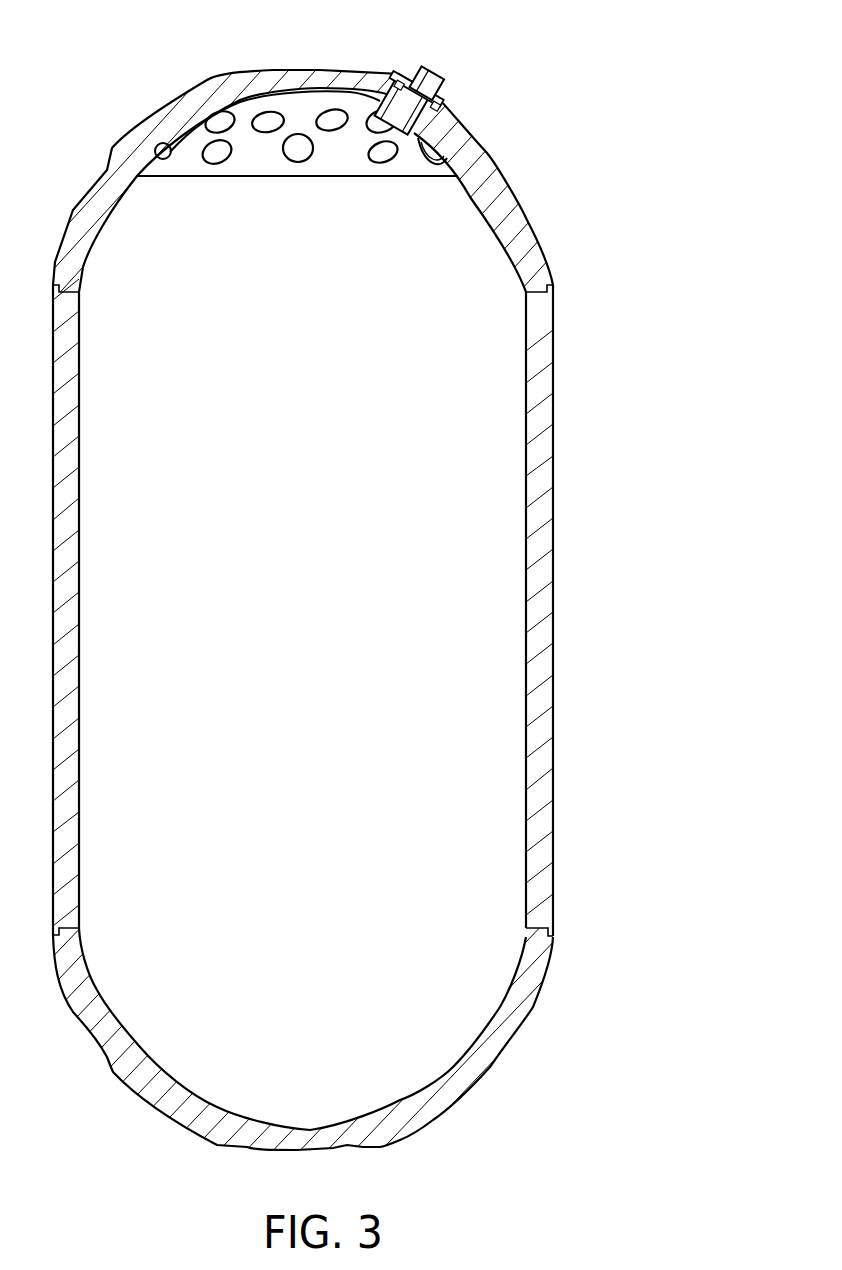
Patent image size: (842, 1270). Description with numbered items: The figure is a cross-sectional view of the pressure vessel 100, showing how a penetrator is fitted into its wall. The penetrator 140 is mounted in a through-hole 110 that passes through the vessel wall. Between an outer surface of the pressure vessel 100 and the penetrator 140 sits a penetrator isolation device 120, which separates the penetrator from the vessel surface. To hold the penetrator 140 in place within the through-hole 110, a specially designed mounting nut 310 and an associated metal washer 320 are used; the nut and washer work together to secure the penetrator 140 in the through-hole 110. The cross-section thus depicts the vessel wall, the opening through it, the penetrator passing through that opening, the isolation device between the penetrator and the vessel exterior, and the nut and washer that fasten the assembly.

The pressure vessel 100 is at (543, 653).
The through-hole 110 is at (386, 84).
The penetrator isolation device 120 is at (435, 100).
The penetrator 140 is at (425, 80).
The mounting nut 310 is at (418, 123).
The metal washer 320 is at (424, 140).